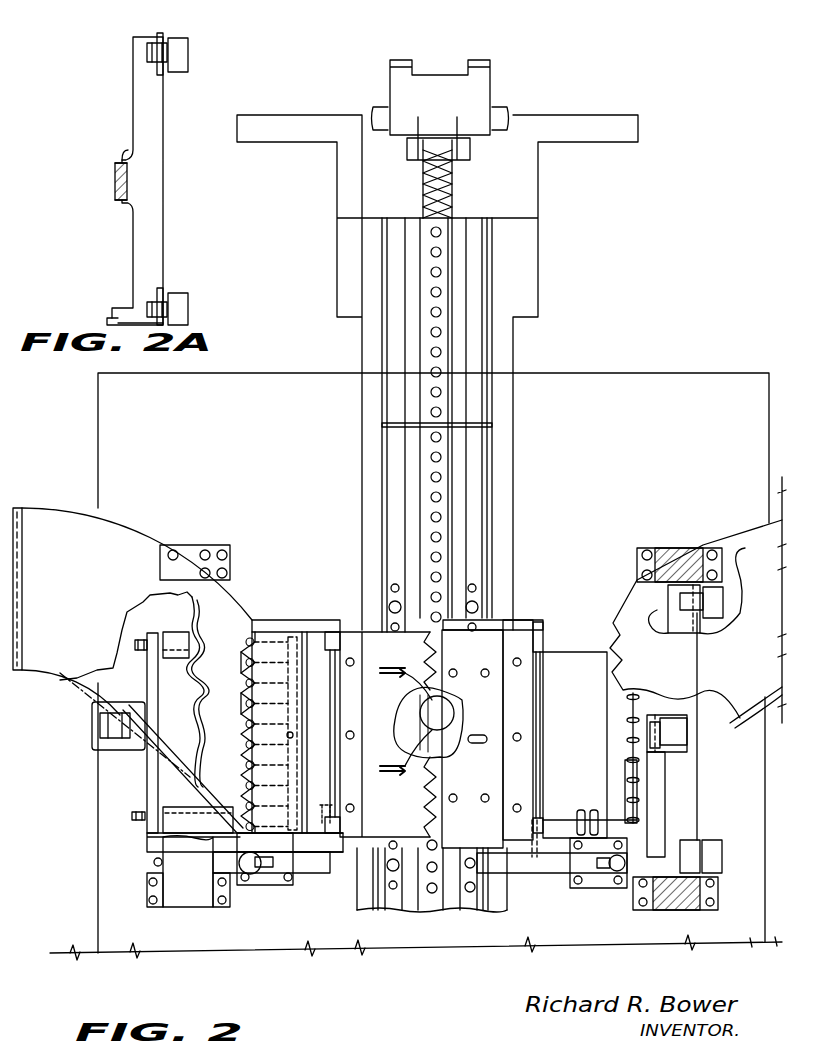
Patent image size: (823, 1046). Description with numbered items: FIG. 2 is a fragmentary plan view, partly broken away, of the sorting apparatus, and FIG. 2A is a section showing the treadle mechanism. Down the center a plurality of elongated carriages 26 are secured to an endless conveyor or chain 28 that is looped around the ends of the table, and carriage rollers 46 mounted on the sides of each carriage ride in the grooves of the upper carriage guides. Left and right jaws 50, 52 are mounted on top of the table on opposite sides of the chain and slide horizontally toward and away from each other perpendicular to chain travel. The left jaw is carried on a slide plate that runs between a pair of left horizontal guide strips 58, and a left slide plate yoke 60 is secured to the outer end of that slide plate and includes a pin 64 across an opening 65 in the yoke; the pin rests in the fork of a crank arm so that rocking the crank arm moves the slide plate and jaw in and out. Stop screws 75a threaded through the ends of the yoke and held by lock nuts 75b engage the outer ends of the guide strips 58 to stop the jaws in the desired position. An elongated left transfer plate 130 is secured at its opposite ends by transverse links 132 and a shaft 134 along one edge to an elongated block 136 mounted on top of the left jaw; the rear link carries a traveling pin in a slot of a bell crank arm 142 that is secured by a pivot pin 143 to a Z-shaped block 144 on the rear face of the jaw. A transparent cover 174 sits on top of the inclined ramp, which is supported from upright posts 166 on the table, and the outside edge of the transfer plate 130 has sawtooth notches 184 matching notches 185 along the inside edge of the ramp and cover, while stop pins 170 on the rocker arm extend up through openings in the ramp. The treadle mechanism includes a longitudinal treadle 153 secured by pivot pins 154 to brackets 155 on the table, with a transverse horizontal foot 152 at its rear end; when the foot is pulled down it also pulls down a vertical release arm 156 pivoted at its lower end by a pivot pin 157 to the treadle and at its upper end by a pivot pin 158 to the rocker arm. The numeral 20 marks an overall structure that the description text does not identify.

In FIG. 2, the frame 20 is at (645, 450).
In FIG. 2, the elongated carriages 26 is at (488, 85).
In FIG. 2, the endless conveyor or chain 28 is at (455, 175).
In FIG. 2, the carriage rollers 46 is at (378, 110).
In FIG. 2, the left jaw 50 is at (388, 721).
In FIG. 2, the right jaw 52 is at (437, 660).
In FIG. 2, the left horizontal guide strips 58 is at (175, 632).
In FIG. 2, the left slide plate yoke 60 is at (95, 745).
In FIG. 2, the pin 64 is at (110, 725).
In FIG. 2, the opening 65 is at (137, 713).
In FIG. 2, the stop screws 75a is at (137, 643).
In FIG. 2, the lock nuts 75b is at (140, 650).
In FIG. 2, the left transfer plate 130 is at (300, 622).
In FIG. 2, the transverse links 132 is at (266, 620).
In FIG. 2, the shaft 134 is at (333, 628).
In FIG. 2, the block 136 is at (355, 648).
In FIG. 2, the bell crank arm 142 is at (293, 880).
In FIG. 2, the pivot pin 143 is at (313, 875).
In FIG. 2, the Z-shaped block 144 is at (325, 812).
In FIG. 2A, the transverse horizontal foot 152 is at (118, 320).
In FIG. 2, the transverse horizontal foot 152 is at (637, 848).
In FIG. 2A, the longitudinal treadle 153 is at (133, 115).
In FIG. 2, the longitudinal treadle 153 is at (688, 802).
In FIG. 2A, the pivot pins 154 is at (160, 37).
In FIG. 2A, the brackets 155 is at (188, 52).
In FIG. 2A, the vertical release arm 156 is at (115, 182).
In FIG. 2, the vertical release arm 156 is at (650, 735).
In FIG. 2A, the pivot pin 157 is at (118, 160).
In FIG. 2, the pivot pin 158 is at (668, 752).
In FIG. 2, the upright posts 166 is at (172, 905).
In FIG. 2, the stop pins 170 is at (628, 724).
In FIG. 2, the transparent cover 174 is at (58, 520).
In FIG. 2, the notches 184 is at (247, 668).
In FIG. 2, the notches 185 is at (248, 748).